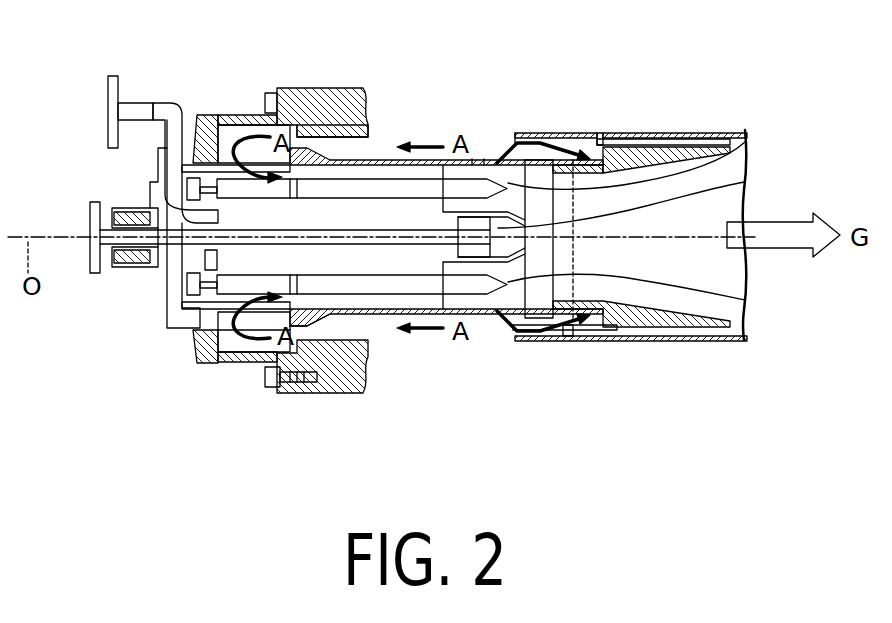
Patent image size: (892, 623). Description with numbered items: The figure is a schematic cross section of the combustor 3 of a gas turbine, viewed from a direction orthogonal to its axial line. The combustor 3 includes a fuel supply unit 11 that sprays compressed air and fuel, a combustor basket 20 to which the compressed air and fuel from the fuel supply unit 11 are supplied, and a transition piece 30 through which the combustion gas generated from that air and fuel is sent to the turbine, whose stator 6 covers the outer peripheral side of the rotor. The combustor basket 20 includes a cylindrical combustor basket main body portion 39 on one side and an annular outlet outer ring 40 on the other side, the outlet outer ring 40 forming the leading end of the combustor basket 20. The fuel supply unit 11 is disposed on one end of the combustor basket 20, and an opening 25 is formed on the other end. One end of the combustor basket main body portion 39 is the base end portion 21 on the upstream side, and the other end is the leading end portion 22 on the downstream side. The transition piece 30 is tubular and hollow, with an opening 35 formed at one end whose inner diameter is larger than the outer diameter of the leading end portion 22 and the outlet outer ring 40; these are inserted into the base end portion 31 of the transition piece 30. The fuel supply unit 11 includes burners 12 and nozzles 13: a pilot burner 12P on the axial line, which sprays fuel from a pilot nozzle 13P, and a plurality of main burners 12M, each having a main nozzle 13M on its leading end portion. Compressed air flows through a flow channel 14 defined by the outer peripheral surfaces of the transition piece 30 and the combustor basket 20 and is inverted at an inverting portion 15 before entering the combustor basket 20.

The combustor 3 is at (88, 184).
The stator 6 is at (312, 88).
The fuel supply unit 11 is at (128, 378).
The end flange 12 is at (90, 212).
The main burner 12M is at (383, 183).
The pilot burner 12P is at (232, 245).
The central shaft 13 is at (185, 247).
The main nozzle 13M is at (745, 142).
The pilot nozzle 13P is at (745, 182).
The flow channel 14 is at (340, 137).
The inverting portion 15 is at (230, 150).
The combustor basket 20 is at (378, 322).
The base end portion 21 is at (337, 318).
The leading end portion 22 is at (567, 165).
The opening 25 is at (640, 166).
The transition piece 30 is at (643, 348).
The base end portion 31 is at (543, 131).
The opening 35 is at (567, 331).
The combustor basket main body portion 39 is at (478, 158).
The outlet outer ring 40 is at (617, 148).